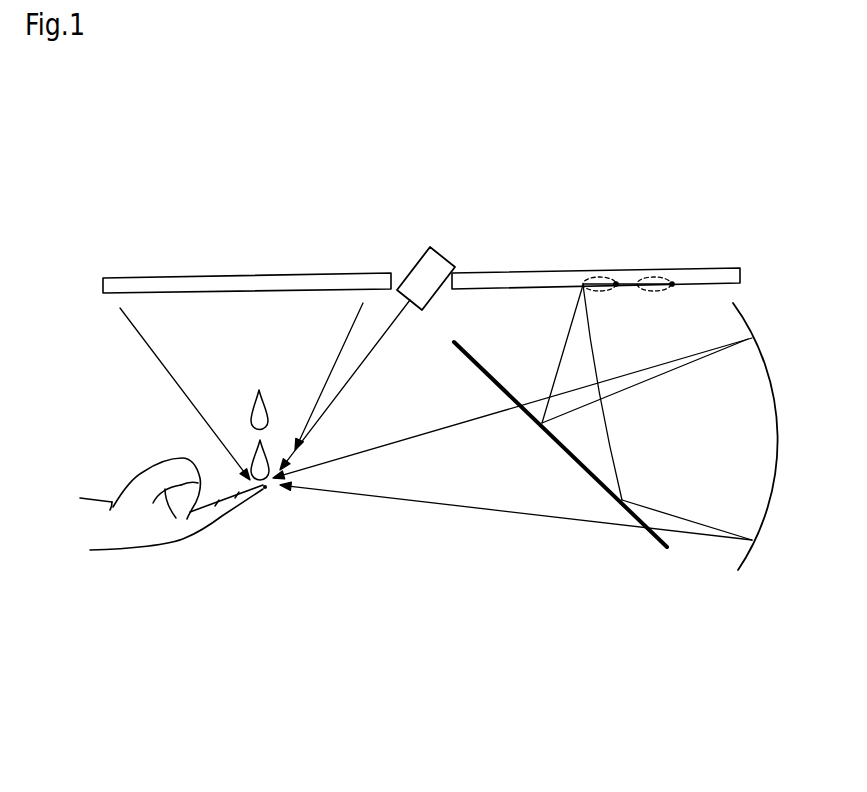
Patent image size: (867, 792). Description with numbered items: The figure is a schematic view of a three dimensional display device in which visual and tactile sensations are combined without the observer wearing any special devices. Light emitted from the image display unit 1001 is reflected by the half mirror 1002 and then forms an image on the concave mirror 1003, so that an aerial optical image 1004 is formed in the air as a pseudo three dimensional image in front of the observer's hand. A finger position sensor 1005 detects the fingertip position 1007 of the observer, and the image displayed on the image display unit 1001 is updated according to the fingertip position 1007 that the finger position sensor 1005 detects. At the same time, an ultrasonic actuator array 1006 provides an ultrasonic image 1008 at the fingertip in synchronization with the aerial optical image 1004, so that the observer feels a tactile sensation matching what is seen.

The image display unit 1001 is at (553, 272).
The half mirror 1002 is at (640, 525).
The concave mirror 1003 is at (767, 507).
The aerial optical image 1004 is at (245, 454).
The finger position sensor 1005 is at (438, 257).
The ultrasonic actuator array 1006 is at (287, 274).
The fingertip position 1007 is at (265, 490).
The ultrasonic image 1008 is at (273, 490).